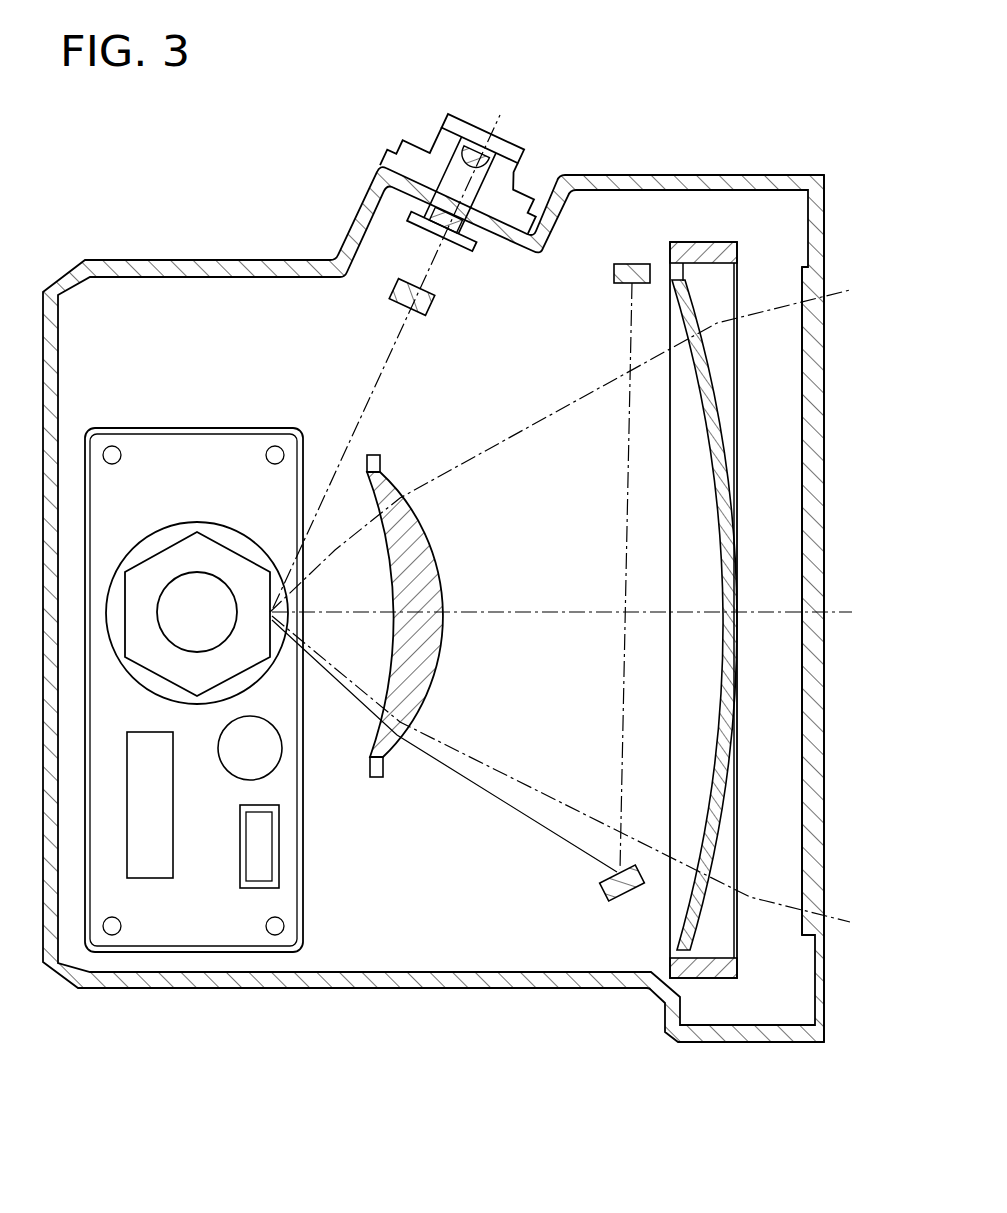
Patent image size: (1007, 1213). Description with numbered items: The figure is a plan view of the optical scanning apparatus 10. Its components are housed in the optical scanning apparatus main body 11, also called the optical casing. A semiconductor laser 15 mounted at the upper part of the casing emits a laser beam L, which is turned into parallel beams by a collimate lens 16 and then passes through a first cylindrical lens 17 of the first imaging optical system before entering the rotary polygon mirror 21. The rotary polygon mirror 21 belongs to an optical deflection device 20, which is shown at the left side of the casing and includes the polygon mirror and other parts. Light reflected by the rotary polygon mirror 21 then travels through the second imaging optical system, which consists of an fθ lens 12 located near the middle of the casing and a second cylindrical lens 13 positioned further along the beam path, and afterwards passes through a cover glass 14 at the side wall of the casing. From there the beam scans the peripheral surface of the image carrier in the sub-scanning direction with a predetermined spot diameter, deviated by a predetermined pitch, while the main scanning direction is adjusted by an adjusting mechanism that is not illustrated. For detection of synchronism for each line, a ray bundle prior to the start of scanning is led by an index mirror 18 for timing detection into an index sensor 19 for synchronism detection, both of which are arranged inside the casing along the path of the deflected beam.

The optical scanning apparatus 10 is at (212, 256).
The optical scanning apparatus main body 11 is at (374, 992).
The fθ lens 12 is at (378, 790).
The second cylindrical lens 13 is at (672, 966).
The cover glass 14 is at (830, 766).
The semiconductor laser 15 is at (498, 136).
The collimate lens 16 is at (472, 242).
The first cylindrical lens 17 is at (430, 306).
The index mirror for timing detection 18 is at (600, 895).
The index sensor for synchronism detection 19 is at (630, 263).
The optical deflection device 20 is at (197, 422).
The rotary polygon mirror 21 is at (192, 545).
The laser beam L is at (370, 384).